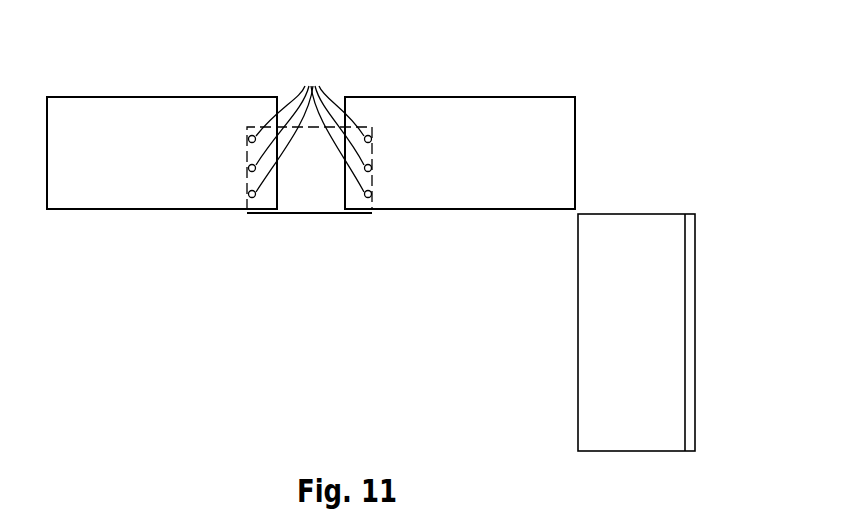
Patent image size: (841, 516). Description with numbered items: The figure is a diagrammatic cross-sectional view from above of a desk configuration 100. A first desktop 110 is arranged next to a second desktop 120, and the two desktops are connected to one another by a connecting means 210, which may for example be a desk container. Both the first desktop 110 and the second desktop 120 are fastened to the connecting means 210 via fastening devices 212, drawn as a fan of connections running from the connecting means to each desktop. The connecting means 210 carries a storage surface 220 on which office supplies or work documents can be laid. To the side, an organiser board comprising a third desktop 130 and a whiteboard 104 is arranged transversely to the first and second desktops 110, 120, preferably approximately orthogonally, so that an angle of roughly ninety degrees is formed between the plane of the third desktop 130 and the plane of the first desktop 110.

The desk configuration 100 is at (483, 78).
The second desktop 120 is at (100, 213).
The first desktop 110 is at (425, 213).
The connecting means 210 is at (298, 213).
The storage surface 220 is at (327, 184).
The fastening devices 212 is at (310, 129).
The third desktop 130 is at (620, 214).
The whiteboard 104 is at (690, 214).